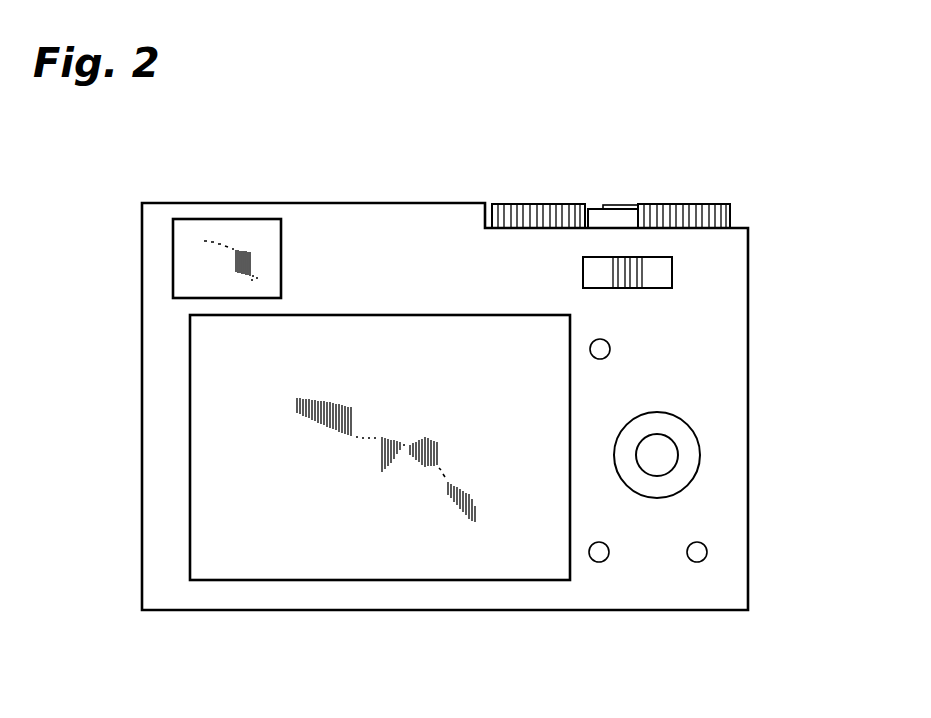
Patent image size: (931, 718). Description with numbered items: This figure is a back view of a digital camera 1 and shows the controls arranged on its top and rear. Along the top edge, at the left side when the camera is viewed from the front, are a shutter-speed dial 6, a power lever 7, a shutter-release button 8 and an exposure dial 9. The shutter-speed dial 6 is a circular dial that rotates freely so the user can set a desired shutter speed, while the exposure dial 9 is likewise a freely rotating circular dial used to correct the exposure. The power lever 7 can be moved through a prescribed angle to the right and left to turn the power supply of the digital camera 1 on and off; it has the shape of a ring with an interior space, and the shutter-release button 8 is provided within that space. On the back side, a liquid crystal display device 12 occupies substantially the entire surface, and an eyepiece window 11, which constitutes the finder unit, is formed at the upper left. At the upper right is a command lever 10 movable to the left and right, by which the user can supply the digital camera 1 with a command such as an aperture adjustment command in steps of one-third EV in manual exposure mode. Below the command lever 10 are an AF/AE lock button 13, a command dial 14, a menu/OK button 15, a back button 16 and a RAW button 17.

The digital camera 1 is at (767, 147).
The shutter-speed dial 6 is at (533, 206).
The power lever 7 is at (595, 220).
The shutter-release button 8 is at (625, 204).
The exposure dial 9 is at (718, 206).
The command lever 10 is at (655, 277).
The eyepiece window 11 is at (277, 278).
The liquid crystal display device 12 is at (418, 337).
The AF/AE lock button 13 is at (609, 349).
The command dial 14 is at (687, 437).
The menu/OK button 15 is at (662, 462).
The back button 16 is at (601, 556).
The RAW button 17 is at (698, 553).